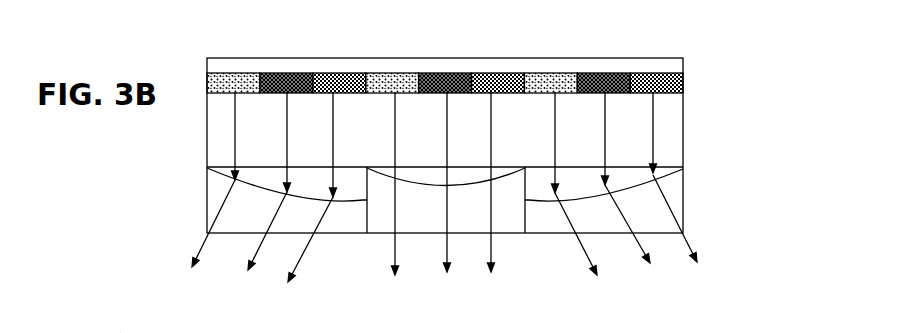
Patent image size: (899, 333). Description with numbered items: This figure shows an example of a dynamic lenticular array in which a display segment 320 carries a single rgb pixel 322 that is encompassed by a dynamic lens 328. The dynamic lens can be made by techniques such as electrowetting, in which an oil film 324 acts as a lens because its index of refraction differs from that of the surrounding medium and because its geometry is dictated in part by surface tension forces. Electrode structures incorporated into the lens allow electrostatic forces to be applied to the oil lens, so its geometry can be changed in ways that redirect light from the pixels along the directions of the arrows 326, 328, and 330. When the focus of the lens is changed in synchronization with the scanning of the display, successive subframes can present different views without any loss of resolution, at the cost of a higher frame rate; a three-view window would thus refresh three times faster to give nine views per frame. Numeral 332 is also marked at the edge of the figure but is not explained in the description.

The display segment 320 is at (540, 57).
The rgb pixel 322 is at (357, 73).
The oil film 324 is at (662, 172).
The arrows 326 is at (264, 202).
The dynamic lens 328 is at (443, 212).
The arrows 330 is at (625, 196).
The image plane 332 is at (120, 332).